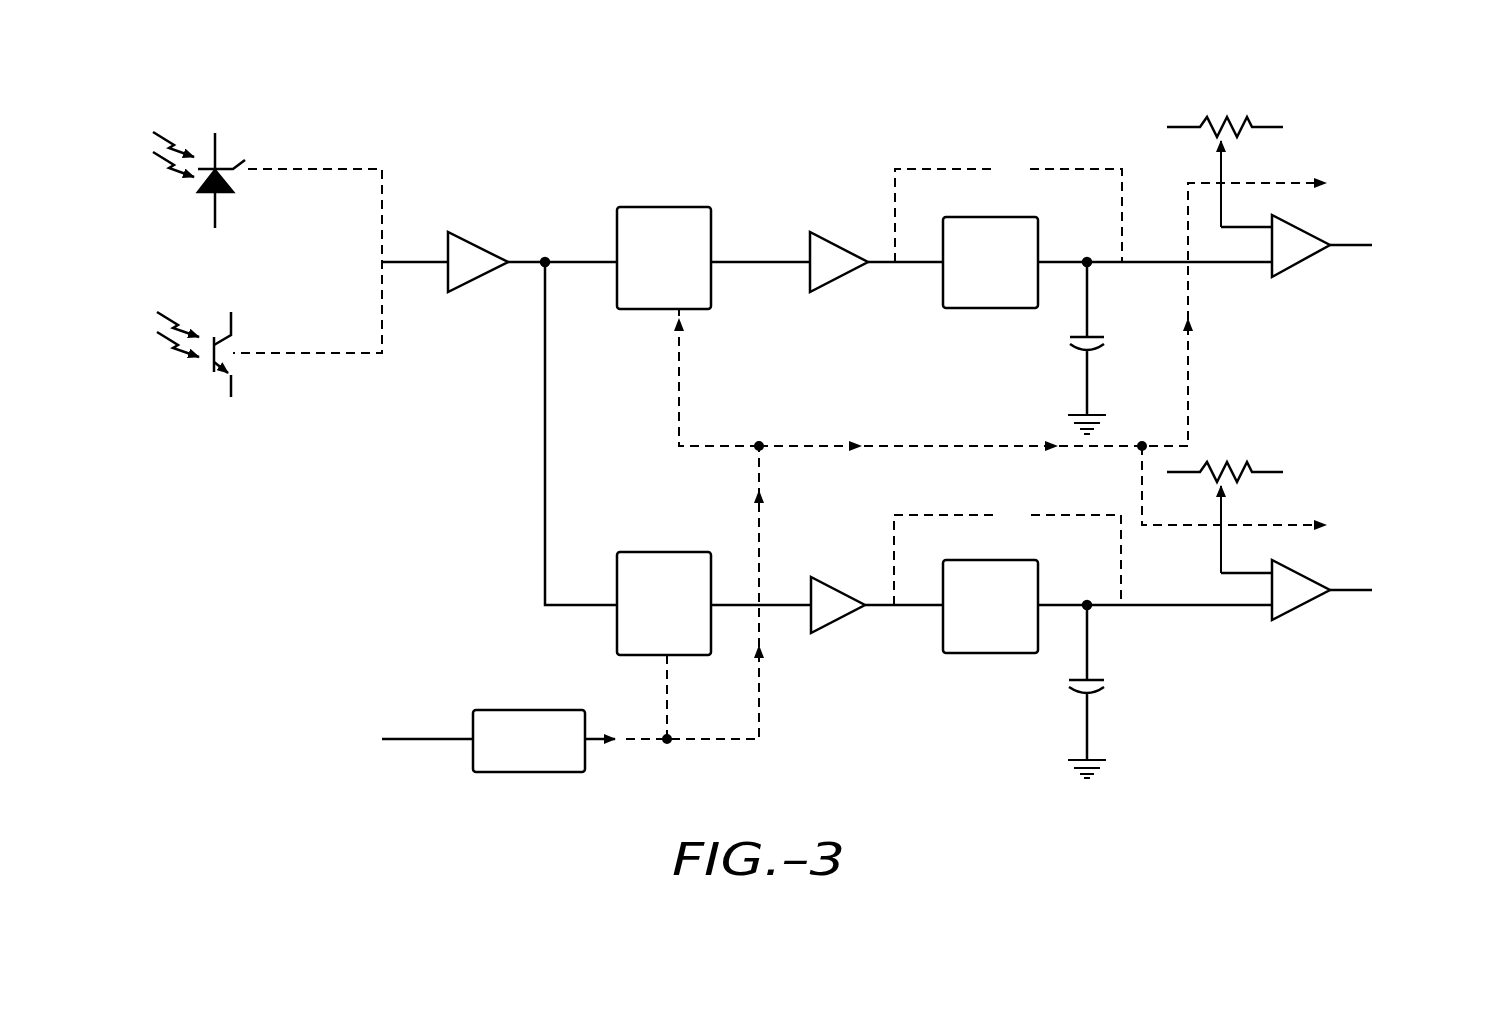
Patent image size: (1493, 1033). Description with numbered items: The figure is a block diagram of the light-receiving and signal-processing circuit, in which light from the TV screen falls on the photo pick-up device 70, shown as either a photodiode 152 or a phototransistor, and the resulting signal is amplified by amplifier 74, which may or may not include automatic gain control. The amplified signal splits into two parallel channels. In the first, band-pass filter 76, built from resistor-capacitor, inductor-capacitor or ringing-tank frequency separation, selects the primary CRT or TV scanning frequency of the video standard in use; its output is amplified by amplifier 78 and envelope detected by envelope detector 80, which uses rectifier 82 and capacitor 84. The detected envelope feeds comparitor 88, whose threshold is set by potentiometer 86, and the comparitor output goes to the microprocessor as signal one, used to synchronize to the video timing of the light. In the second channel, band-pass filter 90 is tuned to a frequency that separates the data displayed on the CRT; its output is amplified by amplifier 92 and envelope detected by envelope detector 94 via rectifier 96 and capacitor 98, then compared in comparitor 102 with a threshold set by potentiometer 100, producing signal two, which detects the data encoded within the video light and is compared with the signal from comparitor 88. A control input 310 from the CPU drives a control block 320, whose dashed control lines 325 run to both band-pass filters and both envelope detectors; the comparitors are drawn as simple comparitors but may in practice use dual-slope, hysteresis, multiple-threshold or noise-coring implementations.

The photodetector 70 is at (190, 104).
The photodiode 152 is at (202, 183).
The amplifier 74 is at (476, 240).
The band-pass filter 76 is at (653, 207).
The amplifier 78 is at (831, 240).
The envelope detector 80 is at (1083, 294).
The rectifier 82 is at (977, 308).
The capacitor 84 is at (1104, 340).
The potentiometer 86 is at (1283, 127).
The comparitor 88 is at (1303, 262).
The band-pass filter 90 is at (640, 552).
The amplifier 92 is at (828, 585).
The envelope detector 94 is at (1083, 639).
The rectifier 96 is at (985, 653).
The capacitor 98 is at (1104, 688).
The potentiometer 100 is at (1268, 472).
The comparitor 102 is at (1303, 605).
The input line from CPU 310 is at (432, 738).
The control block 320 is at (498, 710).
The control signal line 325 is at (715, 740).